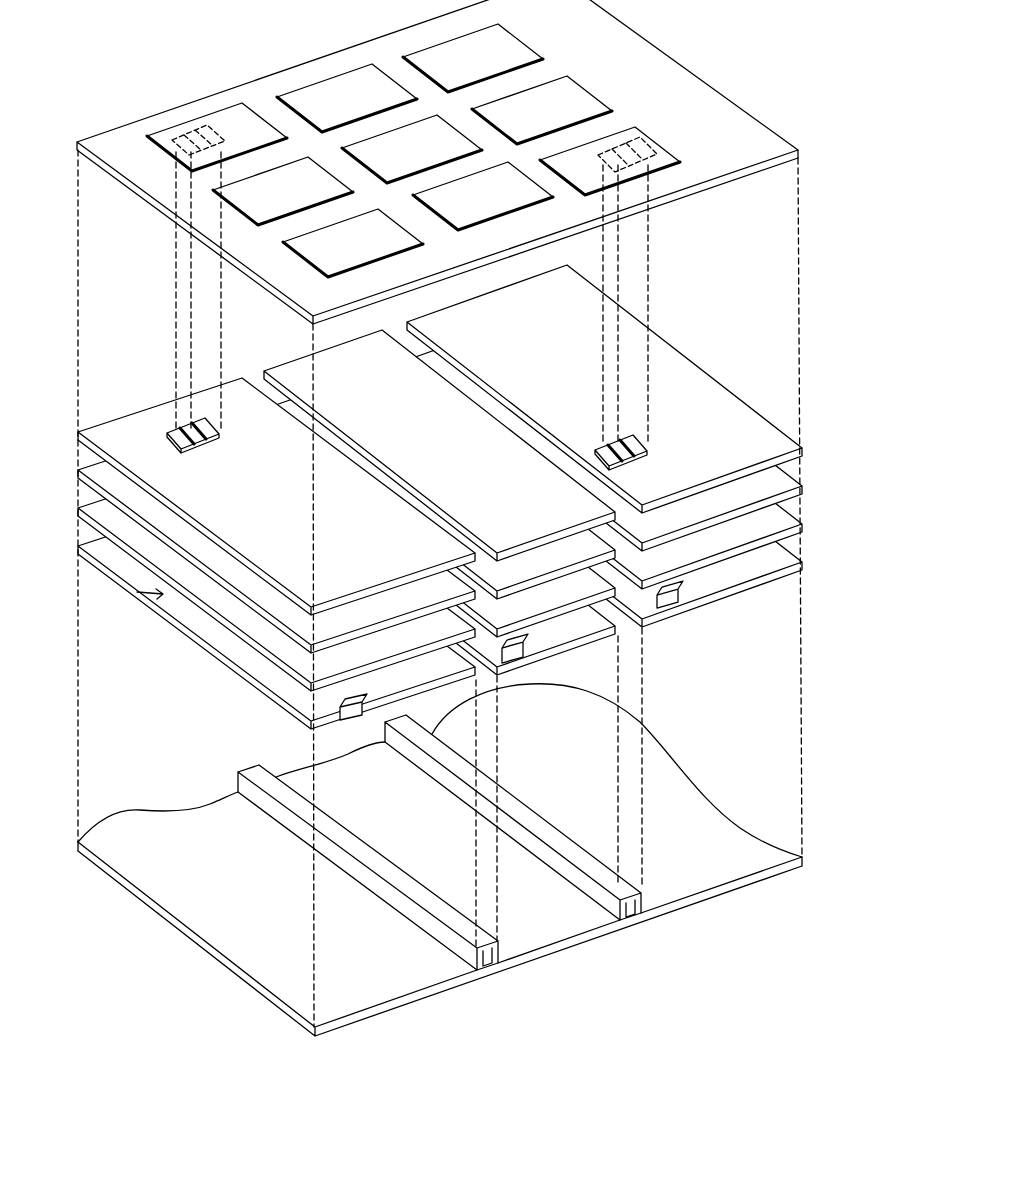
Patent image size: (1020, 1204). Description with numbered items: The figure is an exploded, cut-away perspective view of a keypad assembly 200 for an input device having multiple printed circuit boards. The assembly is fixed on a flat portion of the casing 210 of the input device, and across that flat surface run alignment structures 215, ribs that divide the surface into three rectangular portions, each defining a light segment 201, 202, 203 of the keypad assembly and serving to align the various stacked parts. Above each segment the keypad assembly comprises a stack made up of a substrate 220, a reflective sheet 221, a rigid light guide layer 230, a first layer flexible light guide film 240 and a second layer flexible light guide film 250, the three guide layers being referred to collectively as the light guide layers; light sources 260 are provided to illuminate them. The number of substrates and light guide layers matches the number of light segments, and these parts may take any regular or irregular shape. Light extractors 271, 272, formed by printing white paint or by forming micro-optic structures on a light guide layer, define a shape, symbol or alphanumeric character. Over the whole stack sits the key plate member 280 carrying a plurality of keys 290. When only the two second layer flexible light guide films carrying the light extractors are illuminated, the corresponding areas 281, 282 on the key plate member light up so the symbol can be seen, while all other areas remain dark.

The keypad assembly 200 is at (708, 37).
The light segment 201 is at (226, 943).
The light segment 202 is at (404, 863).
The light segment 203 is at (561, 807).
The casing 210 is at (440, 860).
The alignment structures 215 is at (438, 775).
The substrates 220 is at (95, 554).
The reflective sheets 221 is at (138, 591).
The rigid light guide layers 230 is at (95, 516).
The first layer flexible light guide films 240 is at (95, 478).
The second layer flexible light guide films 250 is at (95, 440).
The light sources 260 is at (352, 714).
The light extractor 271 is at (207, 451).
The light extractor 272 is at (636, 454).
The key plate member 280 is at (158, 199).
The illuminated area 281 is at (200, 128).
The illuminated area 282 is at (645, 150).
The keys 290 is at (517, 46).